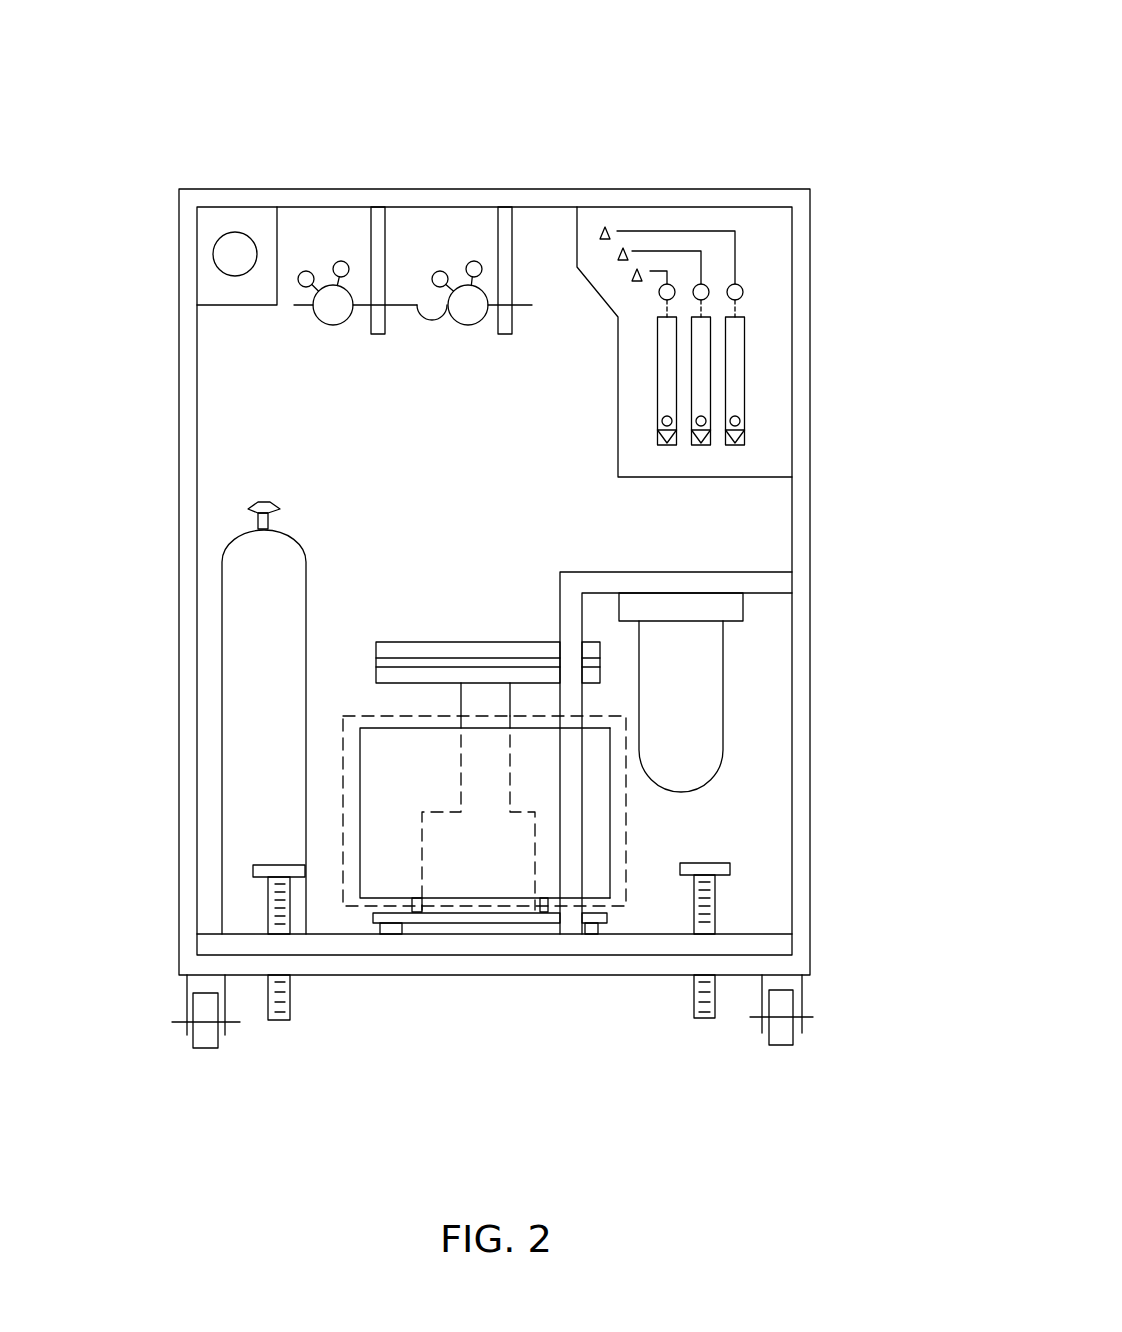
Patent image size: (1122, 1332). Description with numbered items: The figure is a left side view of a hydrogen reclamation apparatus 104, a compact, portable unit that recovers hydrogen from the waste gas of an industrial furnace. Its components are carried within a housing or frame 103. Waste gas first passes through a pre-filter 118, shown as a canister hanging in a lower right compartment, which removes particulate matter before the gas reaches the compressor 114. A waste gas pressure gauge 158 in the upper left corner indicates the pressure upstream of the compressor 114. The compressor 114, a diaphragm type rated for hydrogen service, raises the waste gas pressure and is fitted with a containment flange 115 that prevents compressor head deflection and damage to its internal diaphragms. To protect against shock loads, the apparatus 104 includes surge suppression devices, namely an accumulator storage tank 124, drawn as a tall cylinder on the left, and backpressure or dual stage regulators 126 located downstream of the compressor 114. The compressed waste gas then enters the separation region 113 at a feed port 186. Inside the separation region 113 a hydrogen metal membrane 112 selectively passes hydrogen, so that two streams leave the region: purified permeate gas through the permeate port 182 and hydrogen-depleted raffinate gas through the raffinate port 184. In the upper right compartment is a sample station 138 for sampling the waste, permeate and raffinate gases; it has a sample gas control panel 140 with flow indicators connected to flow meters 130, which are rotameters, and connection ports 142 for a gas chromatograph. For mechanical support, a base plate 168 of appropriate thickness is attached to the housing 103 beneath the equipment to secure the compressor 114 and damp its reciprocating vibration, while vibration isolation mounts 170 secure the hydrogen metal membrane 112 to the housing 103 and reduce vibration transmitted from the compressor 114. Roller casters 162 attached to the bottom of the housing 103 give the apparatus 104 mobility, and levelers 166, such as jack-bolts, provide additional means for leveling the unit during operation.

The hydrogen reclamation apparatus 104 is at (759, 61).
The housing or frame 103 is at (802, 538).
The waste gas pressure gauge 158 is at (235, 254).
The backpressure or dual stage regulators 126 is at (468, 305).
The sample gas control panel 140 is at (720, 231).
The connection ports 142 is at (668, 288).
The flow meters 130 is at (667, 380).
The sample station 138 is at (763, 458).
The accumulator storage tank 124 is at (263, 579).
The compressor 114 is at (376, 651).
The containment flange 115 is at (462, 650).
The feed port 186 is at (359, 785).
The separation region 113 is at (326, 840).
The hydrogen metal membrane 112 is at (390, 832).
The permeate port 182 is at (612, 807).
The raffinate port 184 is at (612, 847).
The pre-filter 118 is at (682, 723).
The base plate 168 is at (763, 942).
The vibration isolation mounts 170 is at (392, 930).
The levelers 166 is at (280, 1012).
The roller casters 162 is at (203, 1035).